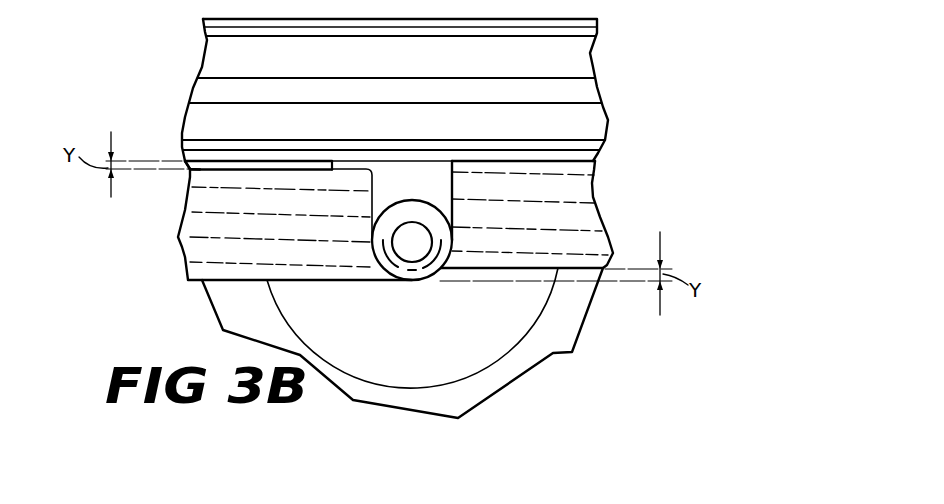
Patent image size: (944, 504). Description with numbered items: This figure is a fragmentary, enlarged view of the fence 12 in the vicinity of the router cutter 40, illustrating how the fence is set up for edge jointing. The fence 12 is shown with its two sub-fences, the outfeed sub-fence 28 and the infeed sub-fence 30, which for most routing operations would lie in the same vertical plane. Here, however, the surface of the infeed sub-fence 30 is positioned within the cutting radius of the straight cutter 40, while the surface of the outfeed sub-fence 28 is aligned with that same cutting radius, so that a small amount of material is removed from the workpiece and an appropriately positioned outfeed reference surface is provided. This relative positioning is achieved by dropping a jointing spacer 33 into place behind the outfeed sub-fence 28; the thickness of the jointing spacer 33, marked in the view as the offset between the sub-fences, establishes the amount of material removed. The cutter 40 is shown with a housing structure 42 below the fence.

The fence 12 is at (585, 70).
The outfeed sub-fence 28 is at (202, 250).
The infeed sub-fence 30 is at (588, 217).
The jointing spacer 33 is at (187, 163).
The router cutter 40 is at (420, 279).
The wheel housing / roller guard 42 is at (538, 351).